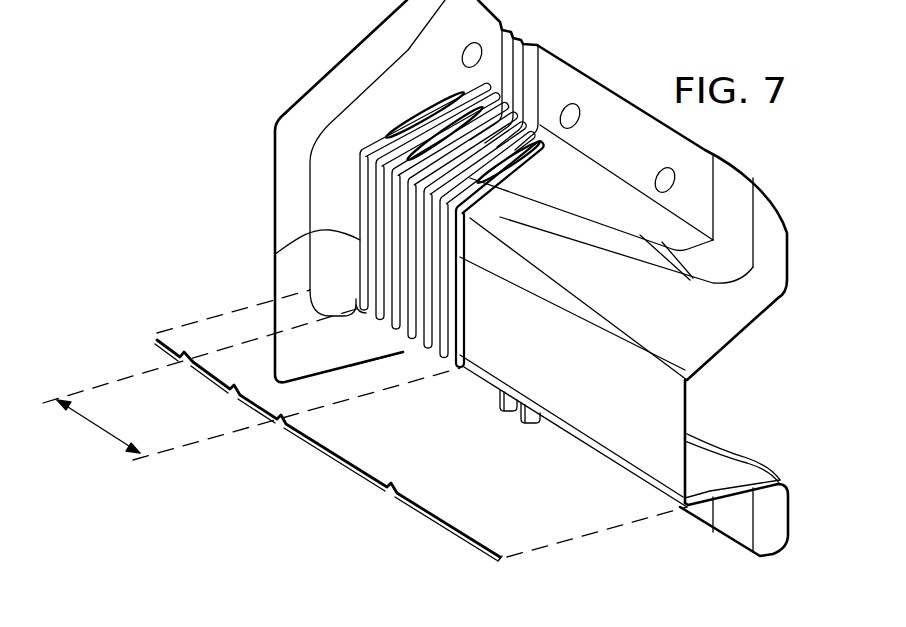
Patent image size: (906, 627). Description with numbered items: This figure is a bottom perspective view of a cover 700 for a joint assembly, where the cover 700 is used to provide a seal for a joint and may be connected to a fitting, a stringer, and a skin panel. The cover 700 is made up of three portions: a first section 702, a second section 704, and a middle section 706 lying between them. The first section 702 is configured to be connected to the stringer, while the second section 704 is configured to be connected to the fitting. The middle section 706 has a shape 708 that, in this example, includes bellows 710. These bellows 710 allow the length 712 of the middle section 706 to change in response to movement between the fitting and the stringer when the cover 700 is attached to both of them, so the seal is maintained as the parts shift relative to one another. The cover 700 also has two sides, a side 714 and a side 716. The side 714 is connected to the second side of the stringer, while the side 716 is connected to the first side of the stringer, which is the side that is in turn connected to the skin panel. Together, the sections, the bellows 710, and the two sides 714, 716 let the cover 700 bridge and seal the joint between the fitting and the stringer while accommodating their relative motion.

The cover 700 is at (318, 73).
The first section 702 is at (365, 425).
The second section 704 is at (157, 343).
The middle section 706 is at (214, 397).
The shape 708 is at (468, 311).
The bellows 710 is at (275, 254).
The length 712 is at (97, 428).
The side 714 is at (577, 84).
The side 716 is at (617, 433).